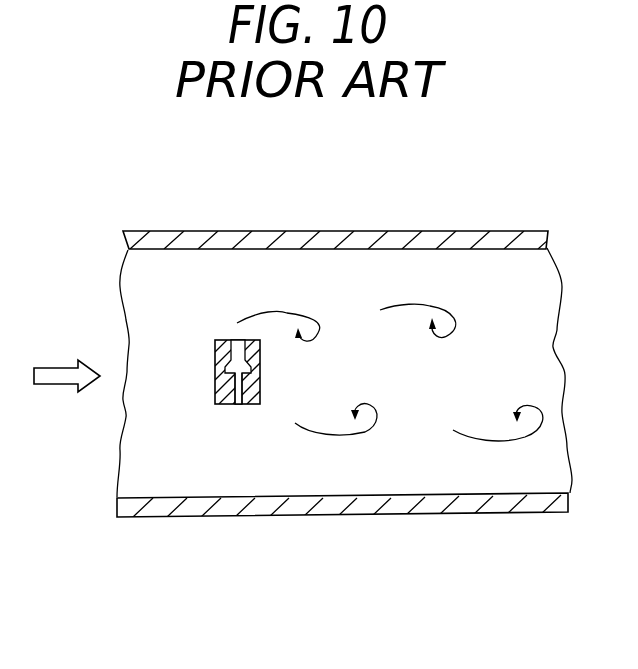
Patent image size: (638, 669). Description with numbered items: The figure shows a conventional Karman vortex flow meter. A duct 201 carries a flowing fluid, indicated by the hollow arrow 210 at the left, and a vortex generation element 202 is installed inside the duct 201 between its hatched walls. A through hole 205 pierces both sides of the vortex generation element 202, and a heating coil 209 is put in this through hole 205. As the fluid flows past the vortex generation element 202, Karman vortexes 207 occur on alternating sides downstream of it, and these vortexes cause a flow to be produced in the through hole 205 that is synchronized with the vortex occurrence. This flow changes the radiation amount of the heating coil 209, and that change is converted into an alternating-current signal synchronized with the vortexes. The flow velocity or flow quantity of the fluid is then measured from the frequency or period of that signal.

The duct 201 is at (460, 522).
The vortex generation element 202 is at (218, 416).
The through hole 205 is at (251, 416).
The Karman vortexes 207 is at (277, 297).
The heating coil 209 is at (239, 383).
The ink flow direction 210 is at (58, 396).